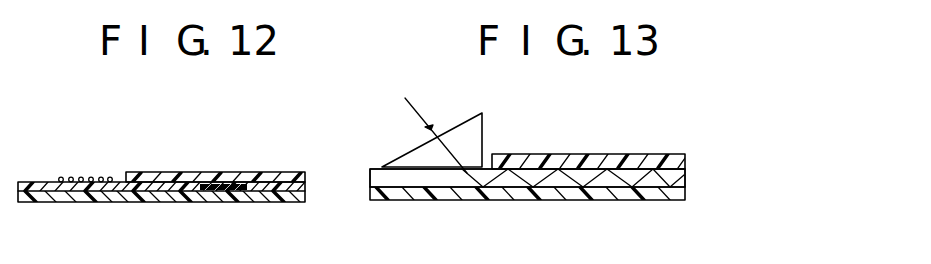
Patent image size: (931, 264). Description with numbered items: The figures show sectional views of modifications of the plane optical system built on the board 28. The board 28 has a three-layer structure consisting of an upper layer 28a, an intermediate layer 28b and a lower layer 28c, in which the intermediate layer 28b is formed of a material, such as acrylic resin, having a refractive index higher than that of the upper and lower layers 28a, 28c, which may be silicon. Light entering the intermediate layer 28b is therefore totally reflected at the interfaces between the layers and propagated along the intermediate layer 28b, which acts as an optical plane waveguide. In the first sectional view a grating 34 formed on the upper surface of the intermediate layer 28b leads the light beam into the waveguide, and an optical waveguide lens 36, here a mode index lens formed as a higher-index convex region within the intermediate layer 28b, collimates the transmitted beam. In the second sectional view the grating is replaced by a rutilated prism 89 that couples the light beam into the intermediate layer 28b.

In FIG. 12, the board 28 is at (162, 203).
In FIG. 13, the board 28 is at (655, 155).
In FIG. 12, the upper layer 28a is at (273, 178).
In FIG. 13, the upper layer 28a is at (598, 164).
In FIG. 12, the intermediate layer 28b is at (96, 189).
In FIG. 13, the intermediate layer 28b is at (433, 180).
In FIG. 12, the lower layer 28c is at (265, 196).
In FIG. 13, the lower layer 28c is at (565, 196).
In FIG. 12, the grating 34 is at (79, 178).
In FIG. 12, the optical waveguide lens 36 is at (220, 183).
In FIG. 13, the rutilated prism 89 is at (477, 125).